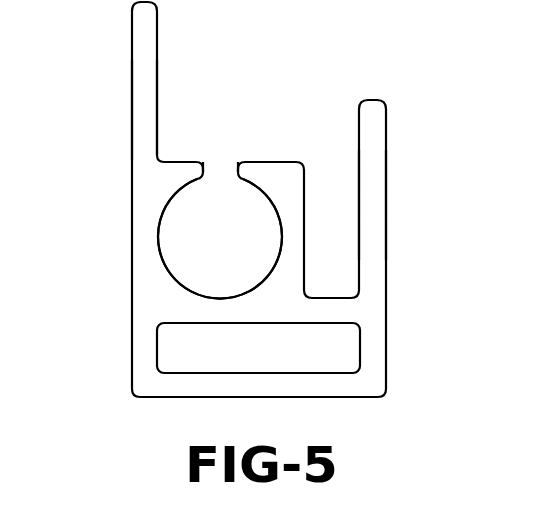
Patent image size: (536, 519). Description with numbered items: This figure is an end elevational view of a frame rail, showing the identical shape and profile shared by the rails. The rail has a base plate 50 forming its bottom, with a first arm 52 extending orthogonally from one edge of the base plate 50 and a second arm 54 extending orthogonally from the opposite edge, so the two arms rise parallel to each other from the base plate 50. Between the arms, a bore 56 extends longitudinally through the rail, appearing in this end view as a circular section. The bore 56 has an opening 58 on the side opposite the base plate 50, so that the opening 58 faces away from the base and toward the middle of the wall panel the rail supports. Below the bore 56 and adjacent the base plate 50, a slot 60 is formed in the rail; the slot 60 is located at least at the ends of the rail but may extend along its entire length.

The base plate 50 is at (308, 388).
The first arm 52 is at (372, 202).
The second arm 54 is at (141, 90).
The bore 56 is at (168, 246).
The opening 58 is at (218, 150).
The slot 60 is at (162, 350).